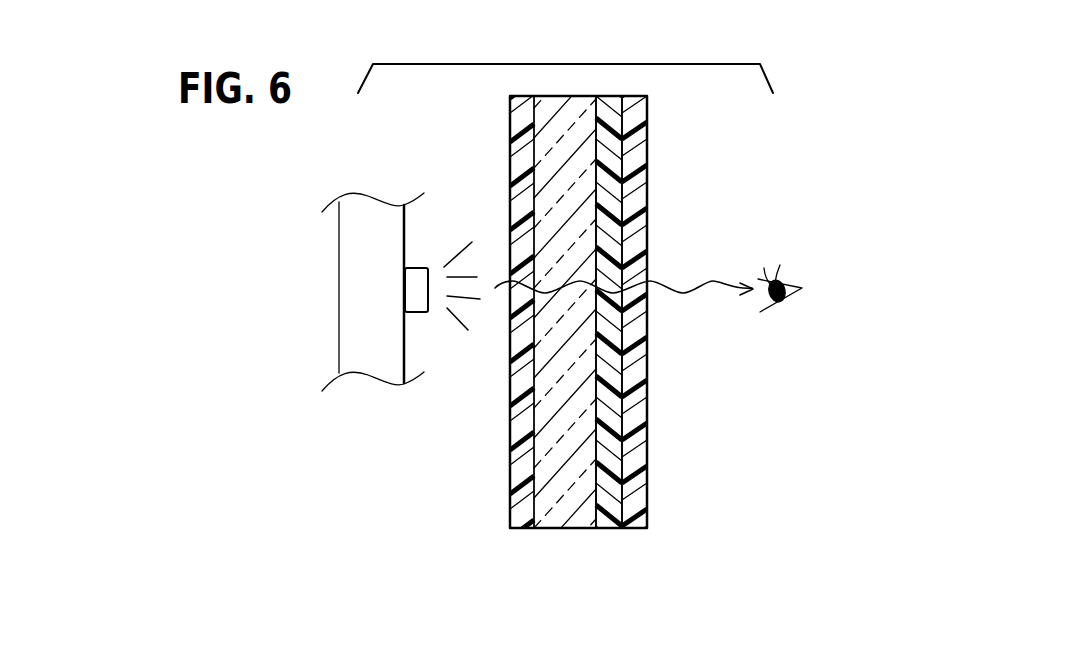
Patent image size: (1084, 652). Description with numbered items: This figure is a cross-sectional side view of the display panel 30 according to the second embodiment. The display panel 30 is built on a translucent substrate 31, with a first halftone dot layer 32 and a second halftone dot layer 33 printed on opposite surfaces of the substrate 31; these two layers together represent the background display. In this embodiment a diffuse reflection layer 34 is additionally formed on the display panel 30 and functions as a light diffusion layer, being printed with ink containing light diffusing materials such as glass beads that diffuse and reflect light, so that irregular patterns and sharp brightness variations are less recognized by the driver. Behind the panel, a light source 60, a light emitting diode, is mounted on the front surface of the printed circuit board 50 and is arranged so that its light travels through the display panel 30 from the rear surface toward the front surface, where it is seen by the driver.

The display panel 30 is at (589, 328).
The translucent substrate 31 is at (573, 523).
The first halftone dot layer 32 is at (613, 529).
The second halftone dot layer 33 is at (522, 529).
The diffuse reflection layer 34 is at (647, 324).
The printed circuit board 50 is at (339, 337).
The light source 60 is at (415, 314).